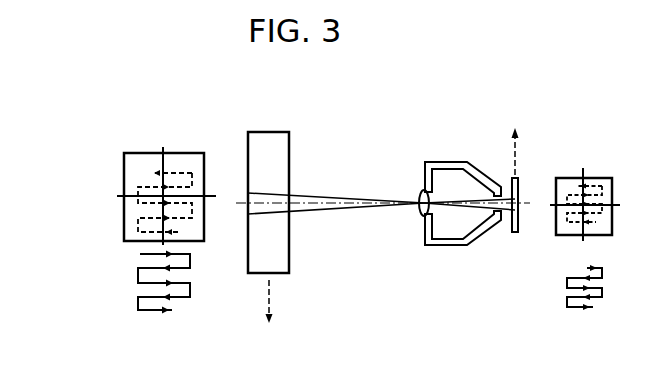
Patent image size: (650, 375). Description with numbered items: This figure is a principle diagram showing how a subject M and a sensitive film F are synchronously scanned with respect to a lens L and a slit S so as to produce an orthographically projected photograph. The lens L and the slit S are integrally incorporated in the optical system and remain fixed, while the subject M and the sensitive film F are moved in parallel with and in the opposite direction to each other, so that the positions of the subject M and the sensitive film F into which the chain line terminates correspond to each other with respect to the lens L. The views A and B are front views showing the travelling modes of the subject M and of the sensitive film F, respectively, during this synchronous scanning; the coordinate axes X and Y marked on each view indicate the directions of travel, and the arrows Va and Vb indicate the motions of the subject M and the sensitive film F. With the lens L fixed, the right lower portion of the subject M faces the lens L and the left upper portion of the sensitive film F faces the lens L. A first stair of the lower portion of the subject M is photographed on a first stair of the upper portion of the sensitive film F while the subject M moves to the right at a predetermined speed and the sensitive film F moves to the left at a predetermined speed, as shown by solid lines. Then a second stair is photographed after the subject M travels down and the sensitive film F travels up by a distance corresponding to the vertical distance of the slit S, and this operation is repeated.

The travelling mode of subject A is at (164, 248).
The travelling mode of sensitive film B is at (584, 256).
The subject M is at (268, 189).
The velocity of mask M Va is at (277, 316).
The lens L is at (420, 198).
The slit S is at (497, 188).
The sensitive film F is at (517, 218).
The velocity of film F Vb is at (517, 139).
The X axis X is at (376, 201).
The Y axis Y is at (373, 183).